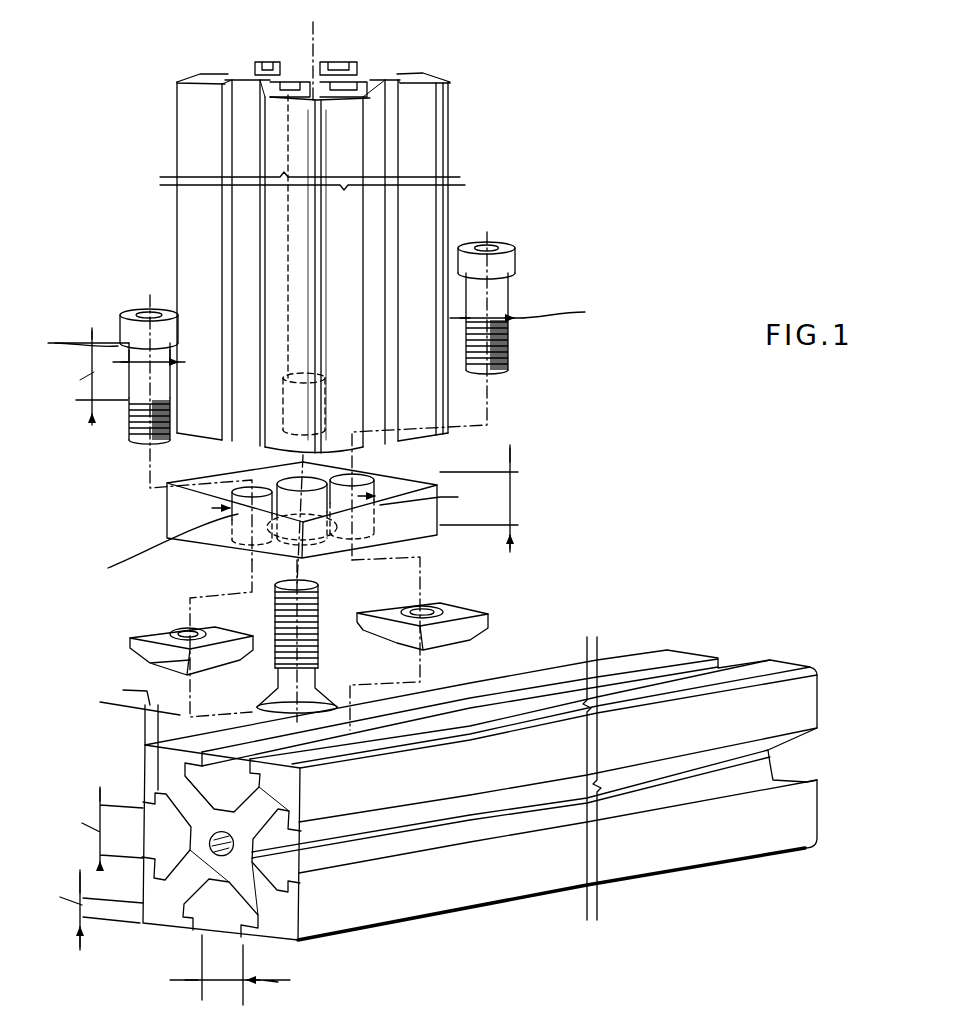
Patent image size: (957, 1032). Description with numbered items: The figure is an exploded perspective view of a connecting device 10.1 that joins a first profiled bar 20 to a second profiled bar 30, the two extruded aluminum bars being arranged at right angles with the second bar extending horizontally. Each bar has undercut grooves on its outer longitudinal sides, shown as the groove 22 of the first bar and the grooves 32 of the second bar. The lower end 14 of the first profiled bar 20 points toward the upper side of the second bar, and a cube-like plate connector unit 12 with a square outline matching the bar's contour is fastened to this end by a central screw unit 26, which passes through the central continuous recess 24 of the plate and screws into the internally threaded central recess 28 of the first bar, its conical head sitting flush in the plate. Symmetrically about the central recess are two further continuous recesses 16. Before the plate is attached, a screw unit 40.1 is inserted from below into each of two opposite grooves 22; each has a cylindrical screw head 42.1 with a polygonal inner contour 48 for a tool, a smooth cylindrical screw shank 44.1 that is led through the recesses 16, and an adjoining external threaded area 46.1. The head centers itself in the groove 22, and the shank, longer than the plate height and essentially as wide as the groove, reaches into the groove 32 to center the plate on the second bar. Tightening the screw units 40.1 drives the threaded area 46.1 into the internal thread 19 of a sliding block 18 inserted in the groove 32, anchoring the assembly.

The connecting device 10.1 is at (625, 500).
The plate connector unit 12 is at (438, 532).
The lower end of the first profiled bar 14 is at (440, 442).
The continuous recesses 16 is at (240, 497).
The sliding block 18 is at (128, 648).
The internal thread 19 is at (185, 628).
The first profiled bar 20 is at (455, 141).
The groove 22 is at (250, 62).
The central continuous recess 24 is at (268, 538).
The central screw unit 26 is at (318, 610).
The central recess with internal thread 28 is at (280, 440).
The second profiled bar 30 is at (477, 888).
The groove of the second profiled bar 32 is at (182, 835).
The screw unit 40.1 is at (115, 330).
The cylindrical screw head 42.1 is at (128, 310).
The cylindrical screw shank 44.1 is at (128, 388).
The external threaded area 46.1 is at (128, 432).
The polygonal inner contour 48 is at (150, 312).